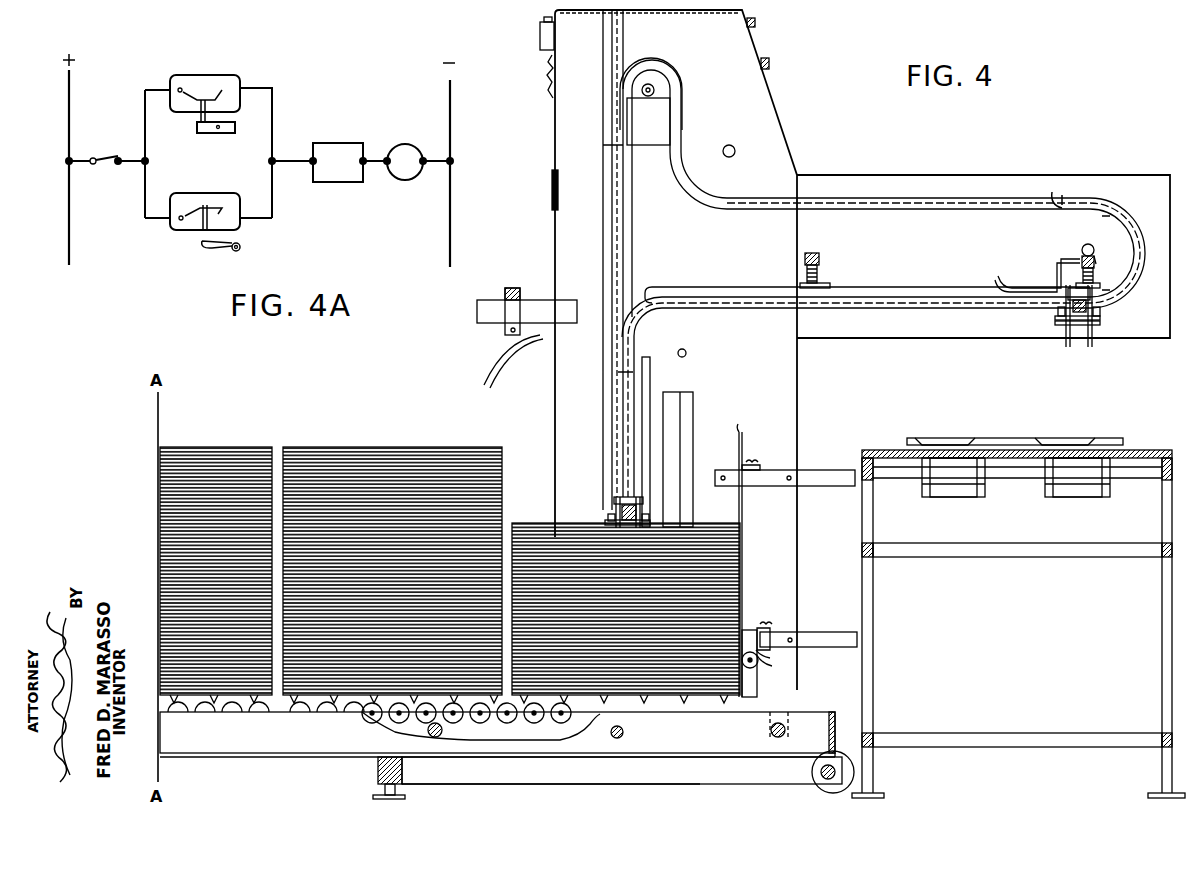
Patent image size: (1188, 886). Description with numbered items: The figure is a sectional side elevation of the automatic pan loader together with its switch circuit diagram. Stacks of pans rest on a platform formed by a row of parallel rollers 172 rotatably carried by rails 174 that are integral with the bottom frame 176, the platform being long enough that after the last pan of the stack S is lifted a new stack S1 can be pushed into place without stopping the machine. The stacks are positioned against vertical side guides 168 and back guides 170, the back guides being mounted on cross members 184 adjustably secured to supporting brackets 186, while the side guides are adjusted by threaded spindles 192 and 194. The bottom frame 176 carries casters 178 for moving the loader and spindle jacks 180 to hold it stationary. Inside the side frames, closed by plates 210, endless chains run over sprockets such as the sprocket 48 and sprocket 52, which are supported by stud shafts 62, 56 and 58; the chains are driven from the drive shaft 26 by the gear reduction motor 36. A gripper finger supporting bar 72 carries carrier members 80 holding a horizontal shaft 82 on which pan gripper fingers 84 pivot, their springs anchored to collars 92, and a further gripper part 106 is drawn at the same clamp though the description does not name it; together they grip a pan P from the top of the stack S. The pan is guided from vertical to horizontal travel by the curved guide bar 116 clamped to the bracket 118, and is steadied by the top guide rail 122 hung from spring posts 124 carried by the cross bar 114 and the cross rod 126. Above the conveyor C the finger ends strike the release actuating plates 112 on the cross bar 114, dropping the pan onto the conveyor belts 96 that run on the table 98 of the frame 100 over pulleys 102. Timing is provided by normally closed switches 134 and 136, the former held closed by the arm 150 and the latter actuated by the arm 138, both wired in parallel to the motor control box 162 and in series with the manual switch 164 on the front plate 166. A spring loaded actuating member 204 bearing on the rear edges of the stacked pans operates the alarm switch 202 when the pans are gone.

In FIG. 4, the drive shaft 26 is at (624, 734).
In FIG. 4A, the gear reduction motor 36 is at (398, 180).
In FIG. 4, the sprocket 48 is at (668, 86).
In FIG. 4, the sprocket 52 is at (1056, 196).
In FIG. 4, the stud shaft 56 is at (687, 351).
In FIG. 4, the stud shaft 58 is at (1088, 248).
In FIG. 4, the stud shaft 62 is at (649, 97).
In FIG. 4, the gripper finger supporting bar 72 is at (1132, 283).
In FIG. 4, the gripper finger carrier member 80 is at (1080, 342).
In FIG. 4, the horizontal shaft 82 is at (1100, 312).
In FIG. 4, the pan gripper finger 84 is at (1066, 338).
In FIG. 4, the collar 92 is at (1060, 312).
In FIG. 4, the conveyor belts 96 is at (968, 438).
In FIG. 4, the table 98 is at (895, 452).
In FIG. 4, the frame 100 is at (1160, 642).
In FIG. 4, the pulleys 102 is at (958, 484).
In FIG. 4, the clamp plate 106 is at (1100, 323).
In FIG. 4, the release actuating plates 112 is at (1028, 270).
In FIG. 4, the cross bar 114 is at (1096, 260).
In FIG. 4, the curved guide bar 116 is at (492, 368).
In FIG. 4, the bracket 118 is at (478, 300).
In FIG. 4, the top guide rail 122 is at (740, 287).
In FIG. 4, the spring posts 124 is at (818, 275).
In FIG. 4, the cross rod 126 is at (819, 260).
In FIG. 4A, the switch 134 is at (236, 75).
In FIG. 4A, the switch 136 is at (213, 193).
In FIG. 4A, the arm 138 is at (218, 250).
In FIG. 4A, the arm 150 is at (227, 133).
In FIG. 4A, the motor control box 162 is at (347, 143).
In FIG. 4A, the manual switch 164 is at (112, 157).
In FIG. 4, the manual switch 164 is at (540, 40).
In FIG. 4, the front plate 166 is at (548, 88).
In FIG. 4, the vertical side guides 168 is at (694, 407).
In FIG. 4, the vertical back guides 170 is at (742, 440).
In FIG. 4, the rollers 172 is at (500, 738).
In FIG. 4, the rails 174 is at (718, 755).
In FIG. 4, the bottom frame 176 is at (833, 740).
In FIG. 4, the casters 178 is at (812, 790).
In FIG. 4, the spindle jacks 180 is at (378, 790).
In FIG. 4, the cross members 184 is at (770, 458).
In FIG. 4, the supporting brackets 186 is at (808, 488).
In FIG. 4, the spindle 192 is at (428, 731).
In FIG. 4, the spindle 194 is at (770, 730).
In FIG. 4, the switch 202 is at (772, 660).
In FIG. 4, the actuating member 204 is at (758, 665).
In FIG. 4, the plates 210 is at (808, 222).
In FIG. 4, the stack S is at (533, 515).
In FIG. 4, the new stack S1 is at (408, 440).
In FIG. 4, the pan P is at (1025, 437).
In FIG. 4, the conveyor C is at (1080, 437).